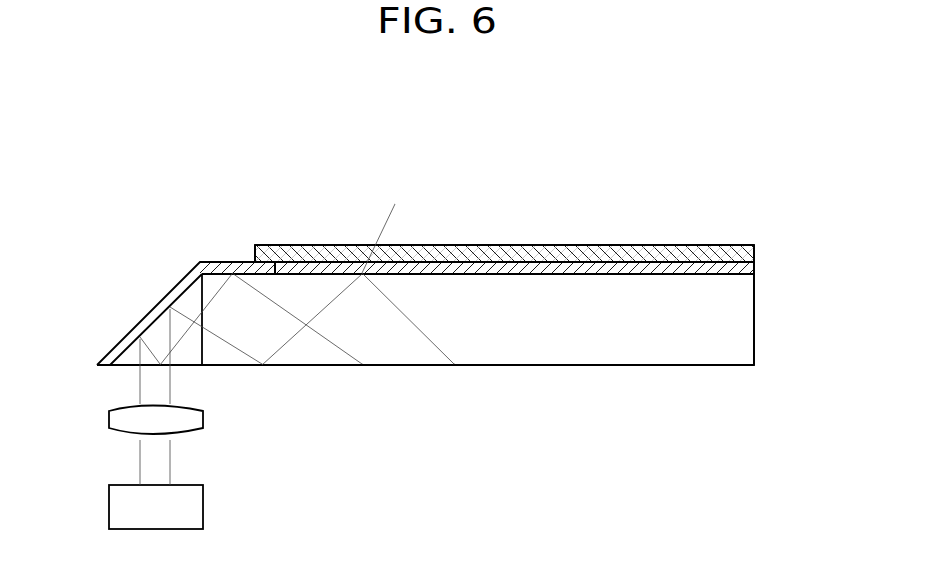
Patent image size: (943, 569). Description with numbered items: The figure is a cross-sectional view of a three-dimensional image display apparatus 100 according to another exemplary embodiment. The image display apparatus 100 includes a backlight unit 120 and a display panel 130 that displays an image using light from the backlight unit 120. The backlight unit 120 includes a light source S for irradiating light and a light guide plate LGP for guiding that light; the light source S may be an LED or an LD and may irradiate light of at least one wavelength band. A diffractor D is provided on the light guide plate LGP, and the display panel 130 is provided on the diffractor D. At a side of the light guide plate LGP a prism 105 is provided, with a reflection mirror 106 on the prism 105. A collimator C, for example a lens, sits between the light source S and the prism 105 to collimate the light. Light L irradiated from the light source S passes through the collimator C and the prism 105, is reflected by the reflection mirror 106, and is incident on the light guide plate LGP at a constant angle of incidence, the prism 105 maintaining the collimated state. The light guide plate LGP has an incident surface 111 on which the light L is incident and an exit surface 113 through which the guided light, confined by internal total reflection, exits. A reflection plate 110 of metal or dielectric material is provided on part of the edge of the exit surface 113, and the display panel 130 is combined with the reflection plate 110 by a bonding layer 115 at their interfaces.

The 3D image display apparatus 100 is at (748, 161).
The prism 105 is at (187, 356).
The reflection mirror 106 is at (180, 287).
The reflection plate 110 is at (217, 263).
The incident surface 111 is at (203, 348).
The exit surface 113 is at (704, 276).
The bonding layer 115 is at (263, 261).
The backlight unit 120 is at (764, 262).
The display panel 130 is at (662, 255).
The diffractor D is at (576, 268).
The light guide plate LGP is at (614, 325).
The collimator C is at (110, 418).
The light source S is at (110, 510).
The light L is at (297, 344).